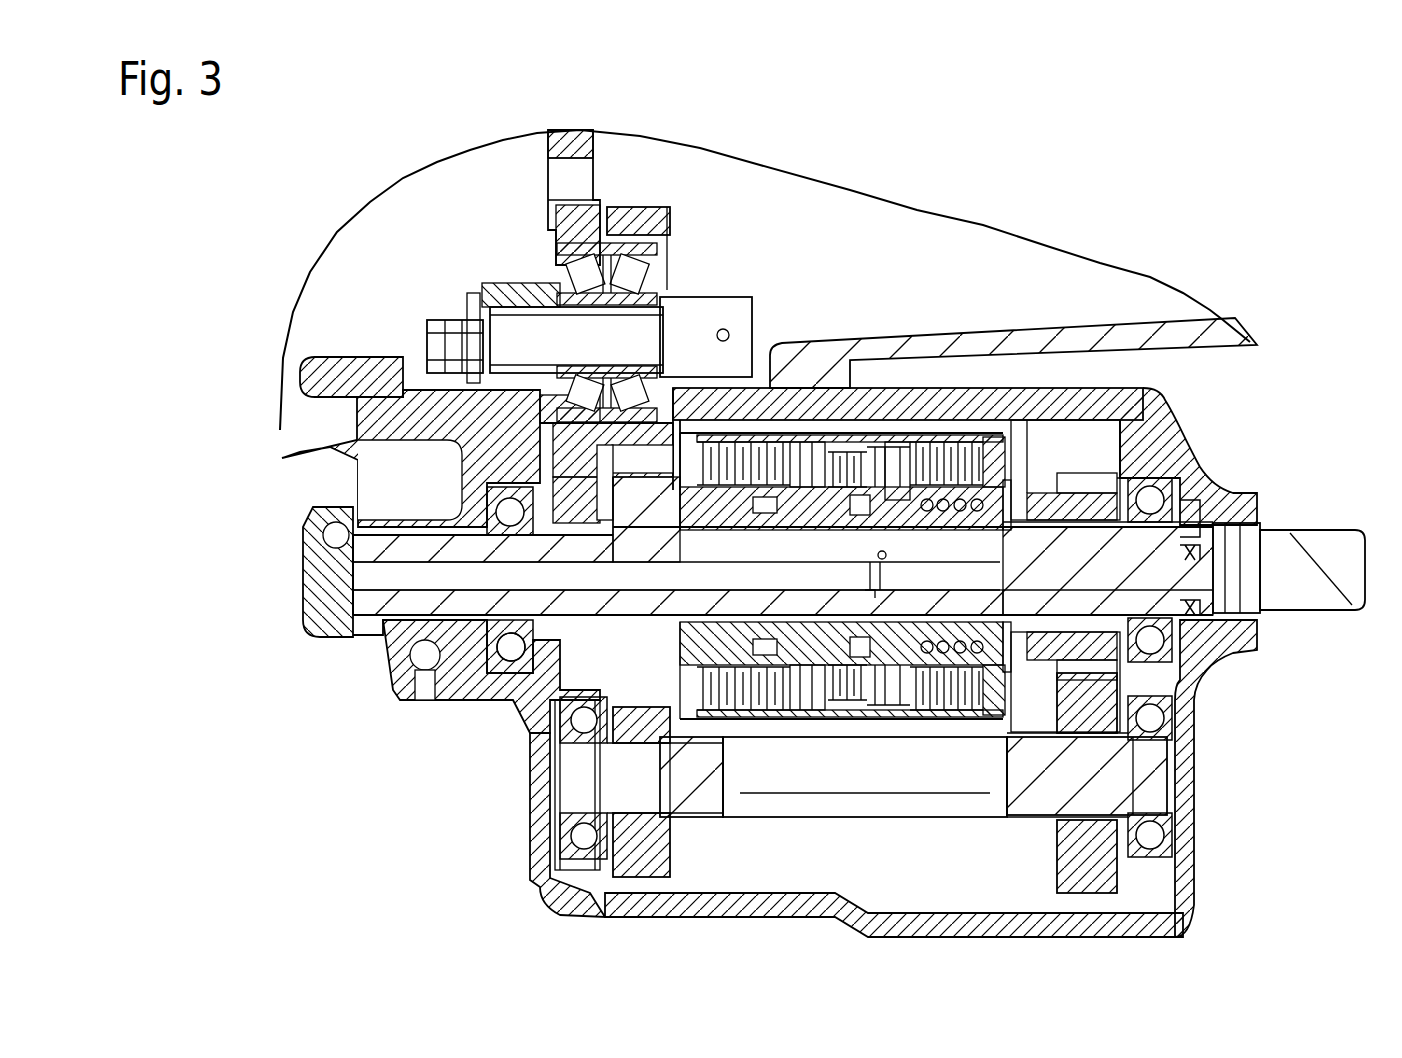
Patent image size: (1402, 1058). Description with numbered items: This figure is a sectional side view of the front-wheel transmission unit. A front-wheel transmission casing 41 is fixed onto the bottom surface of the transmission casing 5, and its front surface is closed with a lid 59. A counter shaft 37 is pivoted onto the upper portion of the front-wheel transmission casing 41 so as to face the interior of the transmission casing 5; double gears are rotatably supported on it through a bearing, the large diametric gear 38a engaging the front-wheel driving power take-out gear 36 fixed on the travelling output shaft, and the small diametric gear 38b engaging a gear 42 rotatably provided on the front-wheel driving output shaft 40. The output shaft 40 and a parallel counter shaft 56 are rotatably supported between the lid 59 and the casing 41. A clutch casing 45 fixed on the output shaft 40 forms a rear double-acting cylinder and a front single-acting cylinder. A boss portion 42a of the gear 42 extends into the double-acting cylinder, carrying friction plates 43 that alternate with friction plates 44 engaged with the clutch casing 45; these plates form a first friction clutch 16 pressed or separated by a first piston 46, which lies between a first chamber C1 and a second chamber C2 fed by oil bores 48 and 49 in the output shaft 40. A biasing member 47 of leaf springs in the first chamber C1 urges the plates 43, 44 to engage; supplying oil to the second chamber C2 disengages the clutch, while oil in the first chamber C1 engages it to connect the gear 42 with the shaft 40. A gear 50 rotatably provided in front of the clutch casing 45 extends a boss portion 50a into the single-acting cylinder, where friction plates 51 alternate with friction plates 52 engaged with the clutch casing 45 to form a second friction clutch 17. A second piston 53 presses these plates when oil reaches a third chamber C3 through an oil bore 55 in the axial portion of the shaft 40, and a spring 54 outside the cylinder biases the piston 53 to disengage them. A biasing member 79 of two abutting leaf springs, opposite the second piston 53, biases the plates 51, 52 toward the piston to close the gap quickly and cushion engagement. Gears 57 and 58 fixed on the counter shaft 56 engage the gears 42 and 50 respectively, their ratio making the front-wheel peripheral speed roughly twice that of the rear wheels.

The transmission casing 5 is at (914, 340).
The first friction clutch 16 is at (752, 725).
The second friction clutch 17 is at (940, 725).
The front-wheel driving power take-out gear 36 is at (548, 147).
The counter shaft 37 is at (568, 351).
The large diametric gear 38a is at (560, 209).
The small diametric gear 38b is at (660, 198).
The front-wheel driving output shaft 40 is at (1295, 543).
The front-wheel transmission casing 41 is at (545, 843).
The gear 42 is at (520, 722).
The boss portion 42a is at (605, 652).
The friction plates 43 is at (797, 718).
The friction plates 44 is at (772, 718).
The clutch casing 45 is at (875, 715).
The first piston 46 is at (840, 712).
The biasing member 47 is at (850, 712).
The oil bore 48 is at (468, 530).
The oil bore 49 is at (886, 557).
The gear 50 is at (1070, 475).
The boss portion 50a is at (995, 532).
The friction plates 51 is at (1005, 485).
The friction plates 52 is at (980, 440).
The second piston 53 is at (900, 440).
The spring 54 is at (1000, 583).
The oil bore 55 is at (878, 590).
The counter shaft 56 is at (565, 776).
The gear 57 is at (605, 908).
The gear 58 is at (1060, 885).
The lid 59 is at (1195, 762).
The biasing member 79 is at (1000, 663).
The first chamber C1 is at (862, 440).
The second chamber C2 is at (805, 432).
The third chamber C3 is at (888, 445).